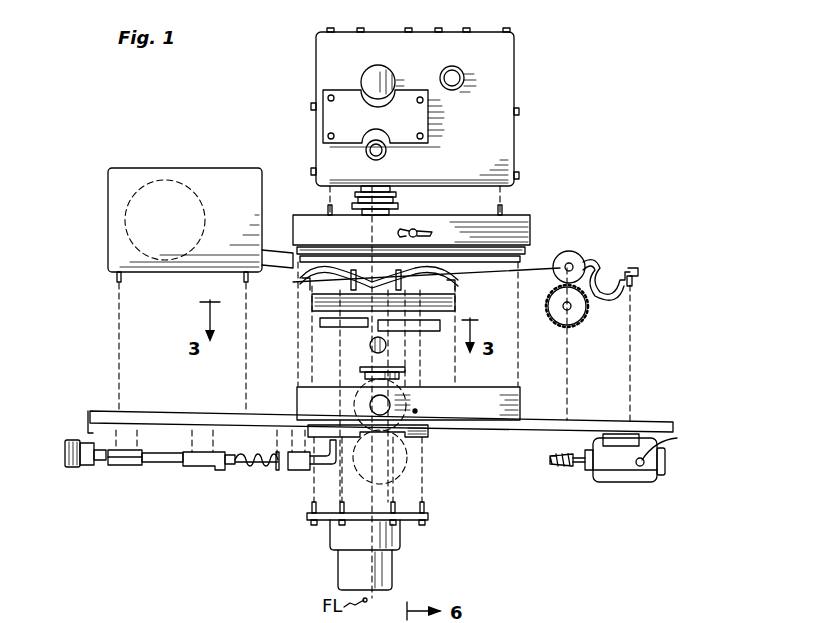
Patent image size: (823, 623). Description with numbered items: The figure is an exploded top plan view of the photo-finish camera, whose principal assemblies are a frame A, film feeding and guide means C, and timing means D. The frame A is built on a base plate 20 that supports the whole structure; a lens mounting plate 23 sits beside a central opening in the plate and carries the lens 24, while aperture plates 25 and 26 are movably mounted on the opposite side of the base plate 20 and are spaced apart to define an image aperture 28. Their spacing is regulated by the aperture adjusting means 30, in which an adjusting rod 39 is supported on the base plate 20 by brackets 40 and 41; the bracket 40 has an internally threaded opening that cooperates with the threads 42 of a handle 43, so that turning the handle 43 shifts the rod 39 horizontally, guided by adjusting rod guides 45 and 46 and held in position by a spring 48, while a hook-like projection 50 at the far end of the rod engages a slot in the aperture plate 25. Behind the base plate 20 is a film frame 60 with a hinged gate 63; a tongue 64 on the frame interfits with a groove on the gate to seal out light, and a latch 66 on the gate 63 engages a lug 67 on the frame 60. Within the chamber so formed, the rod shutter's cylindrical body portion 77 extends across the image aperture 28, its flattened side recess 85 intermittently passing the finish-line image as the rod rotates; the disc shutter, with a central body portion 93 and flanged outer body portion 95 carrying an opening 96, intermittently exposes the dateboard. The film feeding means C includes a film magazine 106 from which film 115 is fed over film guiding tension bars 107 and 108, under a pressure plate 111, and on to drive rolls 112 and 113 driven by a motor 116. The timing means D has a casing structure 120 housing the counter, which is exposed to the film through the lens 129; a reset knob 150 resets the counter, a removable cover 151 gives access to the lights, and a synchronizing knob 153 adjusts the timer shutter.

The base plate 20 is at (200, 412).
The lens mounting plate 23 is at (420, 438).
The lens 24 is at (385, 576).
The aperture plate 25 is at (320, 322).
The aperture plate 26 is at (455, 304).
The image aperture 28 is at (372, 325).
The aperture adjusting means 30 is at (230, 476).
The adjusting rod 39 is at (170, 463).
The bracket 40 is at (86, 420).
The bracket 41 is at (208, 470).
The threads 42 is at (85, 467).
The handle 43 is at (64, 452).
The adjusting rod guide 45 is at (122, 467).
The adjusting rod guide 46 is at (296, 472).
The spring 48 is at (258, 470).
The hook-like projection 50 is at (323, 467).
The film frame 60 is at (521, 405).
The gate 63 is at (446, 230).
The tongue 64 is at (520, 390).
The latch 66 is at (409, 230).
The lug 67 is at (418, 414).
The cylindrical body portion 77 is at (388, 345).
The flattened side recess 85 is at (370, 350).
The central body portion 93 is at (368, 375).
The flanged outer body portion 95 is at (392, 366).
The opening 96 is at (399, 375).
The film magazine 106 is at (115, 207).
The film guiding tension bar 107 is at (302, 280).
The film guiding tension bar 108 is at (445, 280).
The pressure plate 111 is at (372, 262).
The drive roll 112 is at (572, 320).
The drive roll 113 is at (566, 252).
The film 115 is at (530, 280).
The motor 116 is at (618, 483).
The casing structure 120 is at (510, 140).
The lens 129 is at (360, 195).
The reset knob 150 is at (378, 70).
The removable cover 151 is at (420, 119).
The synchronizing knob 153 is at (386, 155).
The frame A is at (678, 461).
The film feeding and guide means C is at (194, 172).
The timing means D is at (518, 86).